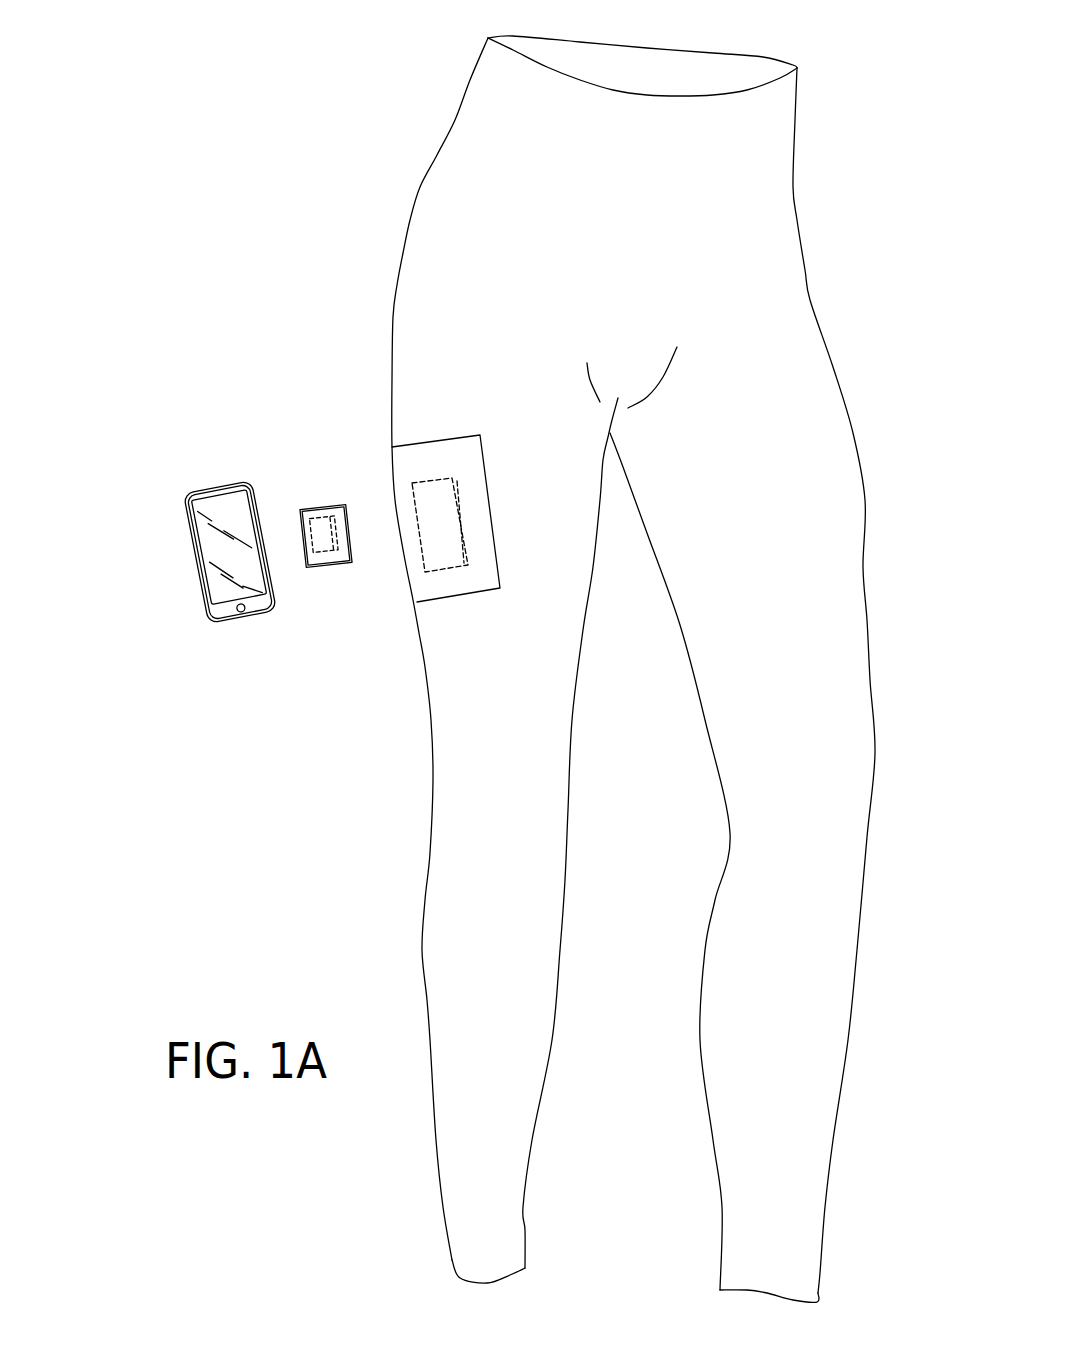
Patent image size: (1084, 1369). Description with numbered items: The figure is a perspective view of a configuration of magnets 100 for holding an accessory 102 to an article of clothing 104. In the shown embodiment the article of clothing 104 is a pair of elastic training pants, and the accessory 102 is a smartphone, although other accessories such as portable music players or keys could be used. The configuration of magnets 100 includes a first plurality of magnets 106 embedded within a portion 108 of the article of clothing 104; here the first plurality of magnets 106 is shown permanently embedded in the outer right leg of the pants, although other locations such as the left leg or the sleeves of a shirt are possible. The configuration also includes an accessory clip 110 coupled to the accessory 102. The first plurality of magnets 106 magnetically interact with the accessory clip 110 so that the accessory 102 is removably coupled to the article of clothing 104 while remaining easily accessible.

The configuration of magnets 100 is at (236, 237).
The accessory 102 is at (193, 492).
The article of clothing 104 is at (448, 660).
The first plurality of magnets 106 is at (440, 480).
The portion of the article of clothing 108 is at (507, 582).
The accessory clip 110 is at (320, 508).